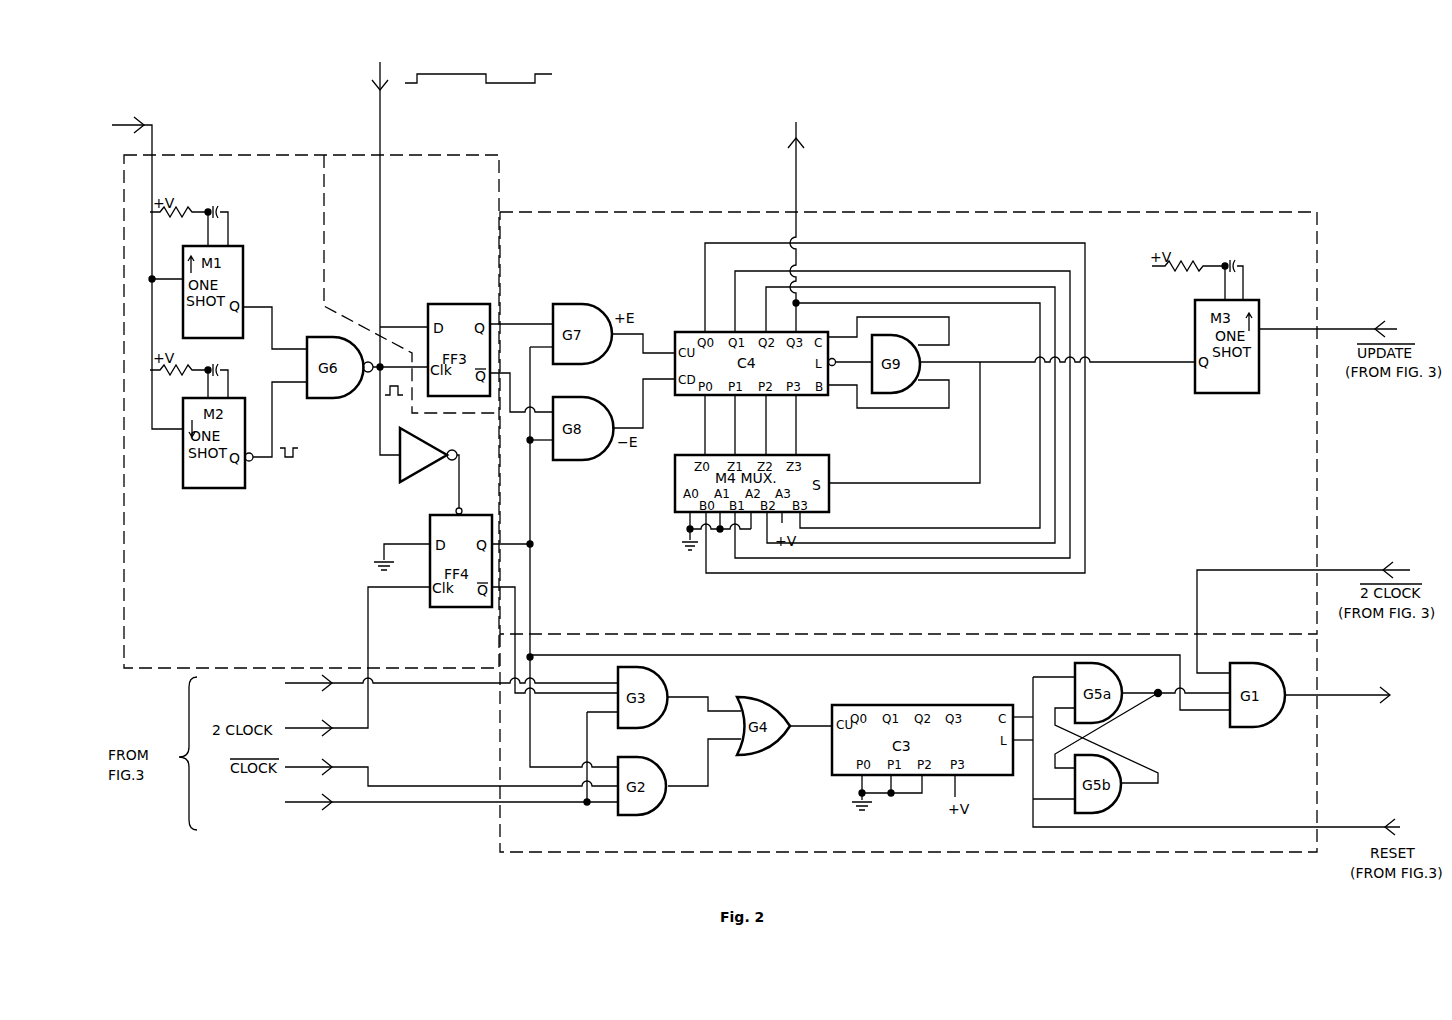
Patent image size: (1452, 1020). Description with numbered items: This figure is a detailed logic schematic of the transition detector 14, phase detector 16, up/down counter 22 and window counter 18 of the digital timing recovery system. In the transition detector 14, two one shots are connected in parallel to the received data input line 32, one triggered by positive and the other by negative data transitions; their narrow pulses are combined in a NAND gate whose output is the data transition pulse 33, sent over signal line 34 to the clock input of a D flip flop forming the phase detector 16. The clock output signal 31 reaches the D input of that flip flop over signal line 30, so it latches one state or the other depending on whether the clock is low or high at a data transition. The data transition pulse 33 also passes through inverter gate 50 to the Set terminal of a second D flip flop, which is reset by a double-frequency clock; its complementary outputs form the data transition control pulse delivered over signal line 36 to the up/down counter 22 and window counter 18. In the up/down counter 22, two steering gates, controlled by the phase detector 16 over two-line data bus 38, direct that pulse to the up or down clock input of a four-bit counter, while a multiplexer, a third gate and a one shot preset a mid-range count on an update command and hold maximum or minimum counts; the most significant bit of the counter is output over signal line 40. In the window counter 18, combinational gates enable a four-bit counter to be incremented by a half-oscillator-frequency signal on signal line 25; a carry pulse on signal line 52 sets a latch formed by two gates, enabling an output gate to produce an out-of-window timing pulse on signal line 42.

The transition detector 14 is at (253, 156).
The phase detector 16 is at (448, 156).
The window counter 18 is at (498, 847).
The up/down counter 22 is at (888, 211).
The signal line 25 is at (335, 808).
The signal line 30 is at (380, 142).
The clock output signal 31 is at (495, 84).
The signal line 32 is at (152, 140).
The data transition pulse 33 is at (410, 397).
The signal line 34 is at (396, 362).
The signal line 36 is at (517, 624).
The two-line data bus 38 is at (512, 318).
The signal line 40 is at (796, 178).
The signal line 42 is at (1354, 706).
The inverter gate 50 is at (427, 469).
The signal line 52 is at (1031, 696).